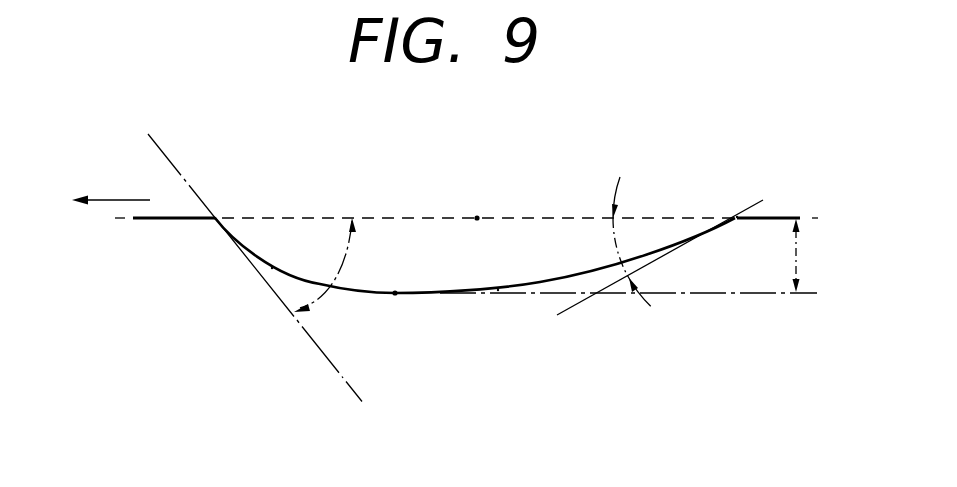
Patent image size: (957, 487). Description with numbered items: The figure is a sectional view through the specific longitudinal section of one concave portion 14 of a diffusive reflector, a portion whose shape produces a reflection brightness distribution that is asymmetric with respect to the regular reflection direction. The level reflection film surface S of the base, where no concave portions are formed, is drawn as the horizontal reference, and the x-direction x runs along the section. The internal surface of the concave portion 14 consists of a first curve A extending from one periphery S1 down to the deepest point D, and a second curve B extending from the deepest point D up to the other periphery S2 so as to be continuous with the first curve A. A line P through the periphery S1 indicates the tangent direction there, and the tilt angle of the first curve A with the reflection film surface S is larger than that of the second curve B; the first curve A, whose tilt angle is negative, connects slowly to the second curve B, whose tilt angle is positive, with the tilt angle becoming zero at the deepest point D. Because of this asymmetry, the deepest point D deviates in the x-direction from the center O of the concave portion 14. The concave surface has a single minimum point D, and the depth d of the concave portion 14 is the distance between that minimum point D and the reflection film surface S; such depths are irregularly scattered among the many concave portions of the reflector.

The concave portion 14 is at (504, 228).
The reference line through S1 P is at (138, 141).
The reflection film surface S is at (773, 217).
The center of the concave portion O is at (478, 200).
The periphery of the concave portion S1 is at (214, 218).
The another periphery of the concave portion S2 is at (737, 217).
The x-direction x is at (101, 182).
The depth of the concave portion d is at (809, 255).
The deepest point D is at (603, 312).
The first curve A is at (272, 268).
The second curve B is at (498, 290).